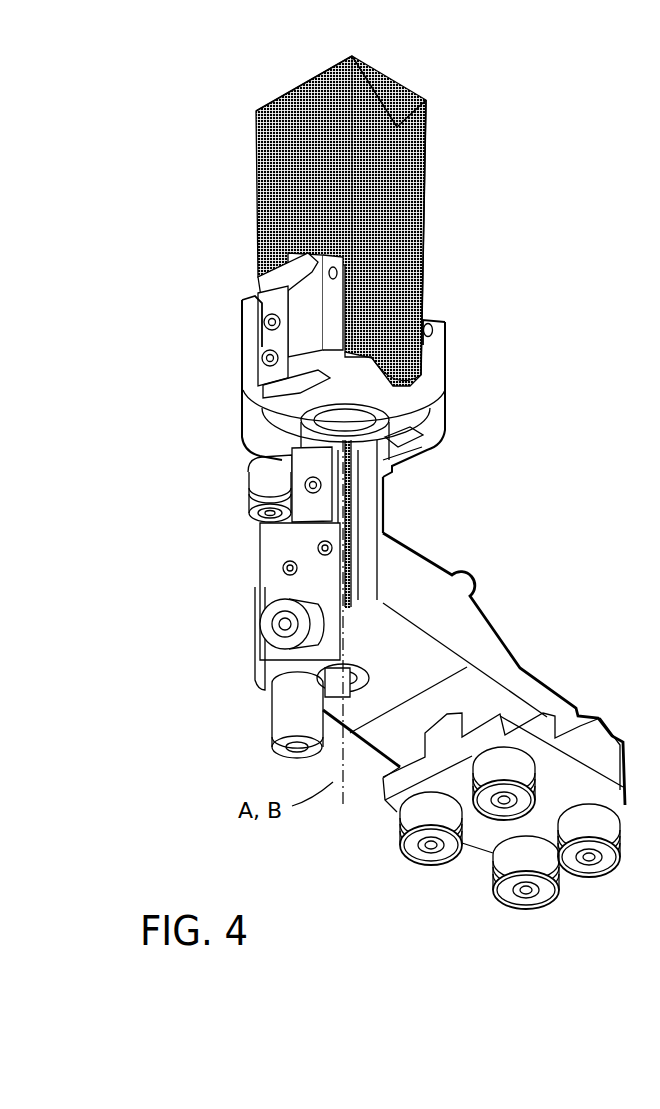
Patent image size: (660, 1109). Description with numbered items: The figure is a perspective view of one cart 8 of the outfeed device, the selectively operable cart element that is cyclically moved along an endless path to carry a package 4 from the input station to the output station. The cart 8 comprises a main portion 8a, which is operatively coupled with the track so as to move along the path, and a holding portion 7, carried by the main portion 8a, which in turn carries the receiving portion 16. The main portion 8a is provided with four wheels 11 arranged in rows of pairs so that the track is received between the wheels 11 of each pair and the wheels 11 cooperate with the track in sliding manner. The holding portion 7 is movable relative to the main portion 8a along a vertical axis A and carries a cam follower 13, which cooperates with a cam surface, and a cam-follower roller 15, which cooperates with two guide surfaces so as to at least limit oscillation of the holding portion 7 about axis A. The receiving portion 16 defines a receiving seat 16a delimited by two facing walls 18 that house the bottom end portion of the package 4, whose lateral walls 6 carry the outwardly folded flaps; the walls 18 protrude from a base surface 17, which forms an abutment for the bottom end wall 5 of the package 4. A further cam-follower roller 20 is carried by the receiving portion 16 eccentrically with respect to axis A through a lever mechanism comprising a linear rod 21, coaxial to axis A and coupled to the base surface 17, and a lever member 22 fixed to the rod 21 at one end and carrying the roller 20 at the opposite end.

The package 4 is at (405, 166).
The bottom end wall 5 is at (272, 90).
The lateral wall 6 is at (402, 228).
The holding portion 7 is at (370, 503).
The cart 8 is at (563, 663).
The main portion 8a is at (480, 645).
The wheels 11 is at (490, 860).
The cam follower 13 is at (268, 666).
The cam-follower roller 15 is at (256, 478).
The receiving portion 16 is at (236, 405).
The receiving seat 16a is at (418, 318).
The base surface 17 is at (447, 400).
The walls 18 is at (247, 349).
The further cam-follower roller 20 is at (280, 716).
The linear rod 21 is at (270, 441).
The lever member 22 is at (352, 690).